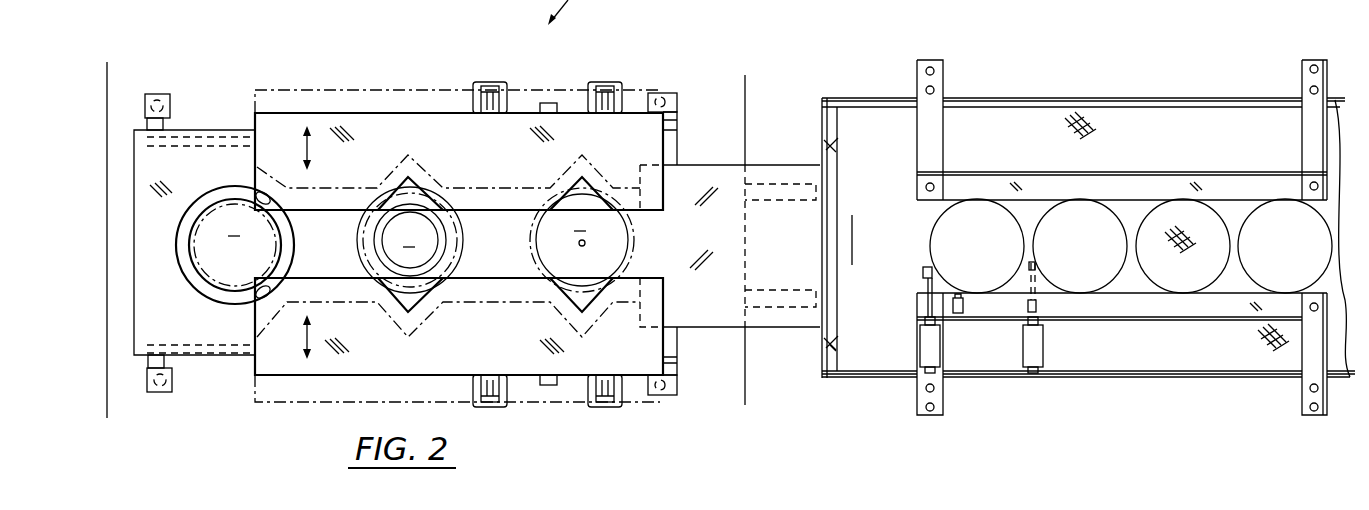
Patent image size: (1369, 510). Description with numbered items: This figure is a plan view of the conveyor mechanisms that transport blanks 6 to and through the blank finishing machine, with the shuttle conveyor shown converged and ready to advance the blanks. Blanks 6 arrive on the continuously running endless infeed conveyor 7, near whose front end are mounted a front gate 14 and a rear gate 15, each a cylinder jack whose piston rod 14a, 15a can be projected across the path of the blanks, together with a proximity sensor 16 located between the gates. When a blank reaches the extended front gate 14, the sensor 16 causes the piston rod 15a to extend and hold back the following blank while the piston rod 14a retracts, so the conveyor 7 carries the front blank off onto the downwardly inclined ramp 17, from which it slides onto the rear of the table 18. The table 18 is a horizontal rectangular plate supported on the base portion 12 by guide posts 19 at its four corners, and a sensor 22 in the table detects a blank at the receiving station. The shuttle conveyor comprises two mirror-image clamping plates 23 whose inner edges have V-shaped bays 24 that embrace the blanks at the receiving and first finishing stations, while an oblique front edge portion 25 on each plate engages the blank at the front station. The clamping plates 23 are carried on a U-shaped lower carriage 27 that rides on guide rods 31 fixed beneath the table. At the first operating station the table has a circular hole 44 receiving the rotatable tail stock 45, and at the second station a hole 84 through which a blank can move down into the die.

The blank 6 is at (292, 256).
The infeed conveyor 7 is at (1074, 126).
The base portion 12 is at (677, 131).
The front gate 14 is at (924, 340).
The piston rod 14a is at (922, 289).
The rear gate 15 is at (1045, 351).
The piston rod 15a is at (1040, 307).
The proximity sensor 16 is at (963, 305).
The ramp 17 is at (778, 318).
The table 18 is at (673, 347).
The guide post 19 is at (170, 104).
The sensor 22 is at (586, 244).
The clamping plate 23 is at (474, 142).
The bay 24 is at (420, 190).
The oblique front edge portion 25 is at (260, 195).
The lower carriage 27 is at (627, 90).
The guide rod 31 is at (217, 133).
The circular hole 44 is at (360, 226).
The tail stock 45 is at (440, 236).
The hole 84 is at (203, 270).